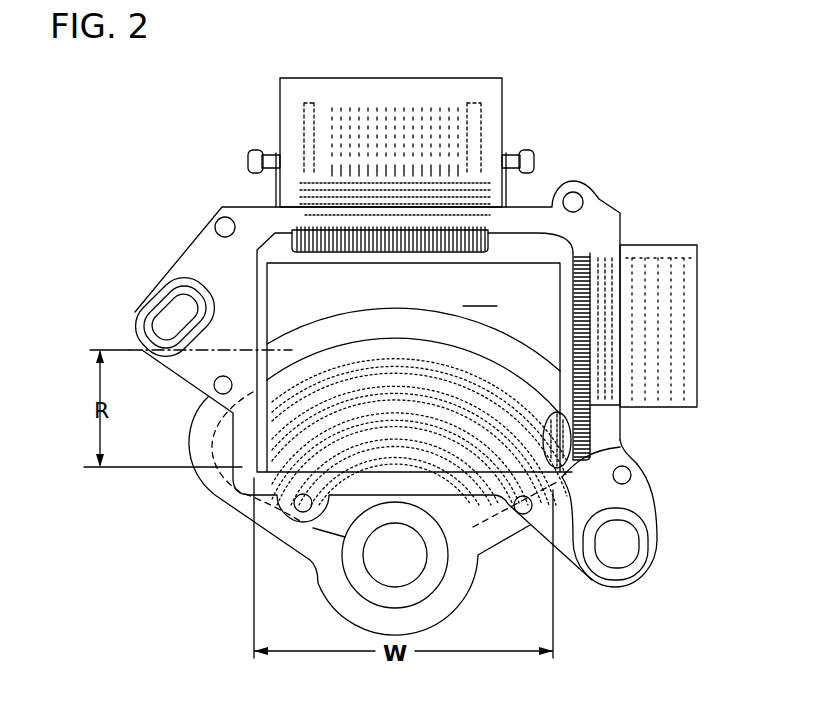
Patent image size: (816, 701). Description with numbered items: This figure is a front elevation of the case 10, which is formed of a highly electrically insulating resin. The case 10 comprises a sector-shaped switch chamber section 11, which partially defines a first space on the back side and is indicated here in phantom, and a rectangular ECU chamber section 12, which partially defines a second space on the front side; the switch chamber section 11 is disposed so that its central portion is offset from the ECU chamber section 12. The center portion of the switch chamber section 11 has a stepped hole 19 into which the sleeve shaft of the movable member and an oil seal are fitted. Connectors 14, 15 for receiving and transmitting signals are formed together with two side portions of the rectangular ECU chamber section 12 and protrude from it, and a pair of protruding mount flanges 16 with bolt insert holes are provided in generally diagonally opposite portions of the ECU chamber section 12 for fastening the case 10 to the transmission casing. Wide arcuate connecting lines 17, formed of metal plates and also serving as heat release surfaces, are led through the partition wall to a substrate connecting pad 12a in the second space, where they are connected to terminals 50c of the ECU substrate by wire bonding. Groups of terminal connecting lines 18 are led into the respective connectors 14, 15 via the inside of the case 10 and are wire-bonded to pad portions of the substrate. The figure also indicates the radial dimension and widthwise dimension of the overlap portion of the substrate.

The case 10 is at (612, 190).
The switch chamber section 11 is at (248, 512).
The ECU chamber section 12 is at (610, 428).
The substrate connecting pad 12a is at (590, 405).
The connector 14 is at (496, 106).
The connector 15 is at (697, 366).
The mount flange 16 is at (173, 367).
The connecting line 17 is at (623, 450).
The terminal connecting line 18 is at (347, 253).
The stepped hole 19 is at (427, 575).
The terminal 50c is at (558, 468).